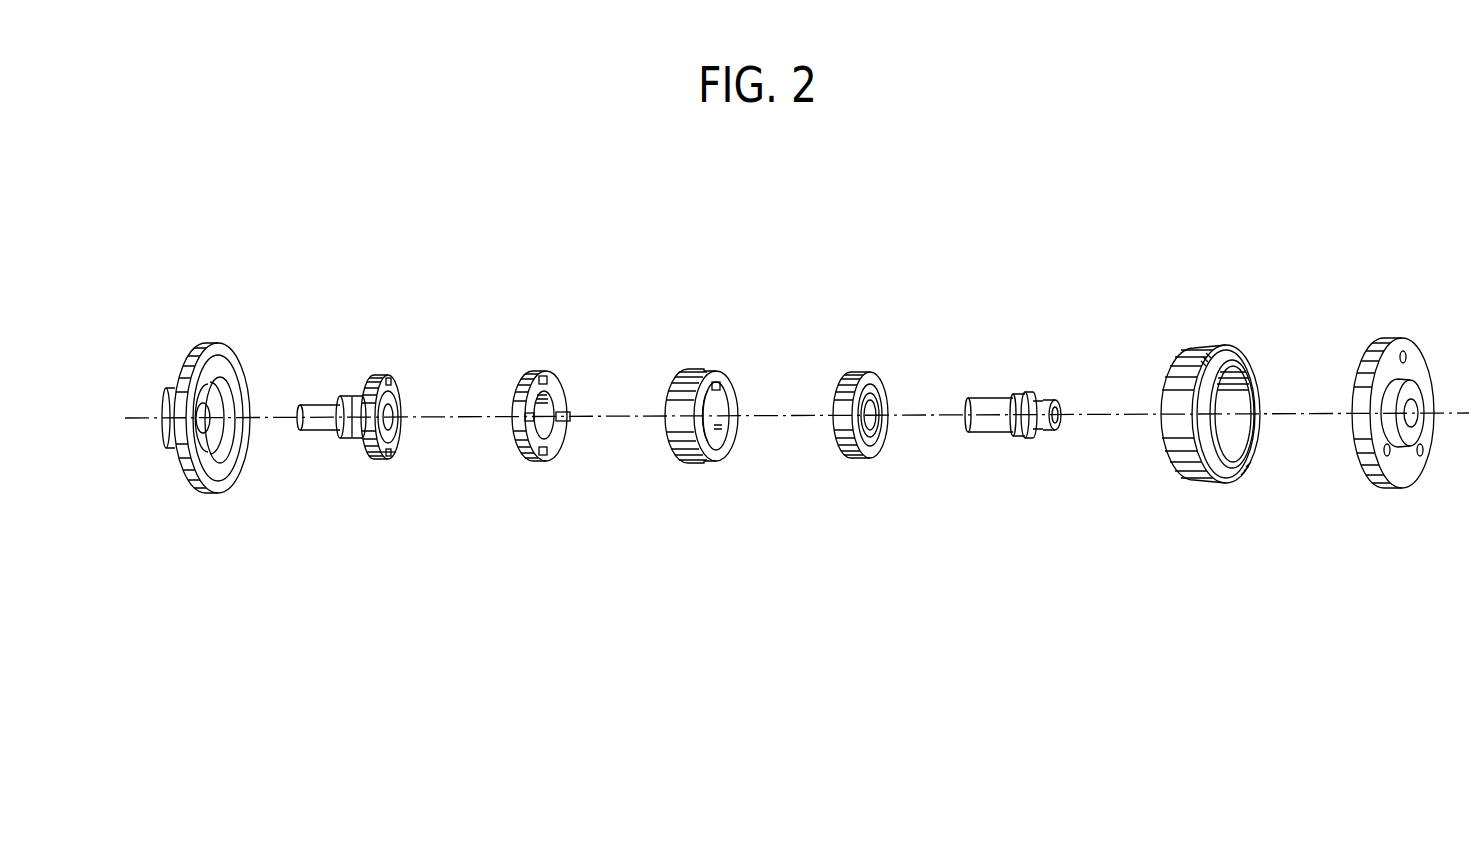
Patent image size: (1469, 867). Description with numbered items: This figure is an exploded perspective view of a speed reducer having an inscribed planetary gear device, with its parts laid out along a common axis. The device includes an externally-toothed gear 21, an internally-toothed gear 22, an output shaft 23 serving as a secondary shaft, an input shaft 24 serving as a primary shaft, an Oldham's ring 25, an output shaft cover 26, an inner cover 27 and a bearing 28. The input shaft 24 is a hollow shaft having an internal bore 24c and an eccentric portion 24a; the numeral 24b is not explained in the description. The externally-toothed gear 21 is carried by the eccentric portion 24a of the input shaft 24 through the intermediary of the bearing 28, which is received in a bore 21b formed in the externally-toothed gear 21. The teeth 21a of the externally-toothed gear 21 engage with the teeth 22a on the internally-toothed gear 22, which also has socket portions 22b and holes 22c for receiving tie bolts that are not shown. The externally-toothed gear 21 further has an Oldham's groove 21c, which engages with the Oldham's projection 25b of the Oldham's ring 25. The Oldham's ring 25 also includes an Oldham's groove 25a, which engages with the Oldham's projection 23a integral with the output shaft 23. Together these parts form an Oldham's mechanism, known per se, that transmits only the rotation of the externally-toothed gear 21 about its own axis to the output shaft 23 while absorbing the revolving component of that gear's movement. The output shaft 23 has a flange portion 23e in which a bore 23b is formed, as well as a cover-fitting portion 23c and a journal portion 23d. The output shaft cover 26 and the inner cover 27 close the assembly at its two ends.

The externally-toothed gear 21 is at (721, 376).
The teeth 21a is at (683, 368).
The bore 21b is at (723, 383).
The Oldham's groove 21c is at (727, 440).
The internally-toothed gear 22 is at (1247, 409).
The teeth 22a is at (1240, 363).
The socket portions 22b is at (1223, 480).
The holes 22c is at (1253, 450).
The output shaft 23 is at (372, 434).
The Oldham's projection 23a is at (370, 453).
The bore 23b is at (393, 430).
The cover-fitting portion 23c is at (360, 393).
The journal portion 23d is at (317, 433).
The flange portion 23e is at (365, 447).
The input shaft 24 is at (1036, 378).
The eccentric portion 24a is at (1018, 393).
The shaft body 24b is at (1033, 437).
The internal bore 24c is at (1060, 408).
The Oldham's ring 25 is at (560, 384).
The Oldham's groove 25a is at (547, 370).
The Oldham's projection 25b is at (568, 420).
The output shaft cover 26 is at (203, 348).
The inner cover 27 is at (1390, 360).
The bearing 28 is at (857, 375).